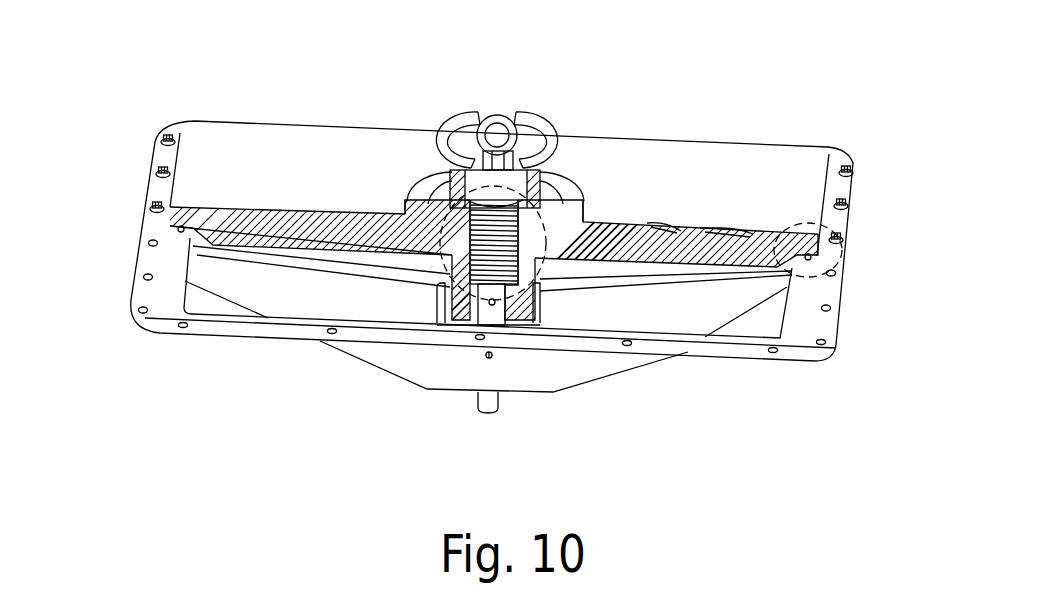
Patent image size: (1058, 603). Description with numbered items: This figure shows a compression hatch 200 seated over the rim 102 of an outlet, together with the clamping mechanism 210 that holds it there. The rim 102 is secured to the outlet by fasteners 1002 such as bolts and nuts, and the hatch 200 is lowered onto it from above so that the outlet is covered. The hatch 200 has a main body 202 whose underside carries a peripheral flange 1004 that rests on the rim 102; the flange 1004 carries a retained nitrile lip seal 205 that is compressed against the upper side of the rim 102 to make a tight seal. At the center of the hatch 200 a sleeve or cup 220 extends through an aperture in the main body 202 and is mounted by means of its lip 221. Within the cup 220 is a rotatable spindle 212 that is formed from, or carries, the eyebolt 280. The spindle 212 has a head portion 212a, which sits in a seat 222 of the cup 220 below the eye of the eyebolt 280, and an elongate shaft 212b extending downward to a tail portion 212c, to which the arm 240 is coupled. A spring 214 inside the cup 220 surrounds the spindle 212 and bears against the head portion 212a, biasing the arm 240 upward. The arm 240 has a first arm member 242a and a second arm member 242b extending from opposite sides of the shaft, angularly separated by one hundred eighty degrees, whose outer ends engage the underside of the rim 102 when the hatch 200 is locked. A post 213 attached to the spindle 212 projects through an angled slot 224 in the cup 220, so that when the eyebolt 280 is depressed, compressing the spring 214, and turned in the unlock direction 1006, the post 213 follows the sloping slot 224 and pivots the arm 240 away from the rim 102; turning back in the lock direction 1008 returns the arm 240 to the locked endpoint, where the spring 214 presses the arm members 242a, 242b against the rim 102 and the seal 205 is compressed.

The compression hatch 200 is at (304, 122).
The main body 202 is at (273, 206).
The rim 102 is at (158, 318).
The flange 1004 is at (189, 240).
The fasteners 1002 is at (150, 207).
The cup 220 is at (630, 230).
The lip 221 is at (583, 222).
The seat 222 is at (578, 188).
The spindle 212 is at (452, 188).
The head portion 212a is at (533, 168).
The shaft 212b is at (432, 343).
The tail portion 212c is at (490, 413).
The eyebolt 280 is at (490, 116).
The unlock direction 1006 is at (440, 138).
The lock direction 1008 is at (552, 126).
The post 213 is at (550, 300).
The spring 214 is at (533, 323).
The angled slot 224 is at (537, 290).
The first arm member 242a is at (290, 294).
The second arm member 242b is at (705, 307).
The lip seal 205 is at (792, 268).
The arm 240 is at (443, 377).
The clamping mechanism 210 is at (698, 492).